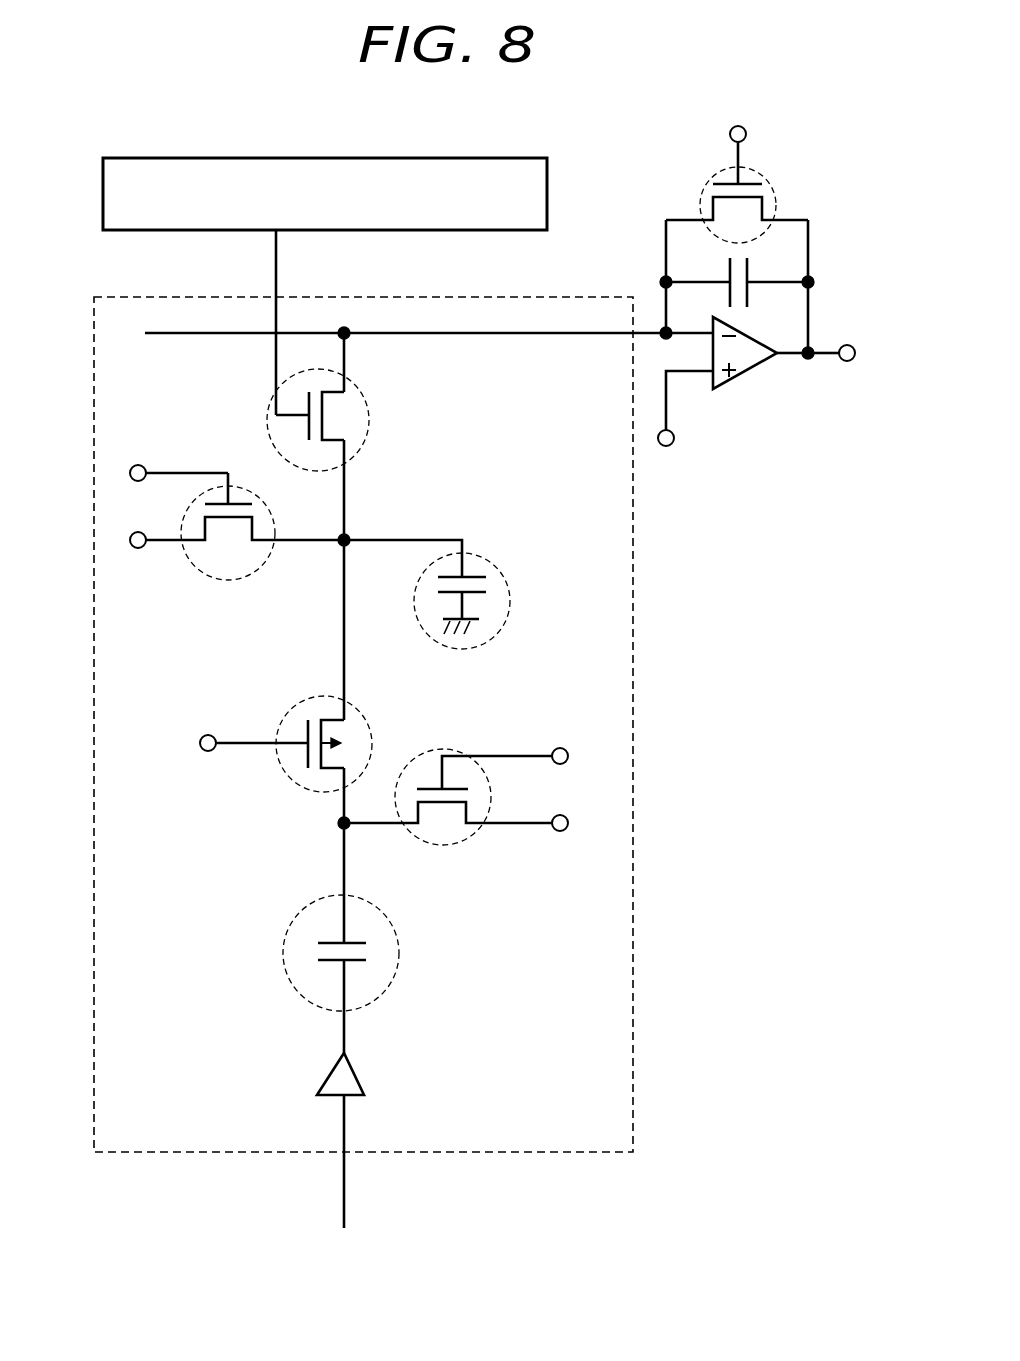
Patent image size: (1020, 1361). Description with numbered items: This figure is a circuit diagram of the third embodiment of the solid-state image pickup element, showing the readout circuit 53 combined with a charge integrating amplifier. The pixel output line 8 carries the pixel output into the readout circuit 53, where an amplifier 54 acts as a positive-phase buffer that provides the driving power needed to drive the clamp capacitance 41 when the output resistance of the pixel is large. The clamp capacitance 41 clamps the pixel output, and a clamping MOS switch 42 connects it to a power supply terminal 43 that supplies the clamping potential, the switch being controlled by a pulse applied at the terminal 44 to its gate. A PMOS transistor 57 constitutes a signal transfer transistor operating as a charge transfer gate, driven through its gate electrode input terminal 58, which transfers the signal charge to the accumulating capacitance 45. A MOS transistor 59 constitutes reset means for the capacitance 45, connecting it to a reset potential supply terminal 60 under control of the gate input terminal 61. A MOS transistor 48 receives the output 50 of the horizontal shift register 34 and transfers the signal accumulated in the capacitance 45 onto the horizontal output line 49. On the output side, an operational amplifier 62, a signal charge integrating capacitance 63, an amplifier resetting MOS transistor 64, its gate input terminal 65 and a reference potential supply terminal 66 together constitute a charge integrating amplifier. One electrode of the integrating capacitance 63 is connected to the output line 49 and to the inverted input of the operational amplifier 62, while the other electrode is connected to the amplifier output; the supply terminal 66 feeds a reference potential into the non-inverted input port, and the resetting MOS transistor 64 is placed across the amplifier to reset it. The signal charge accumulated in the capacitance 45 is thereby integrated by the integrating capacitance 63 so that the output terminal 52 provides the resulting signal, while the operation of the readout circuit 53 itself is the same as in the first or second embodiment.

The pixel output line 8 is at (346, 1190).
The horizontal shift register 34 is at (549, 192).
The clamp capacitance 41 is at (284, 968).
The clamping MOS switch 42 is at (423, 752).
The power supply terminal 43 is at (560, 832).
The terminal 44 is at (562, 747).
The capacitance 45 is at (509, 618).
The MOS transistor 48 is at (367, 425).
The horizontal output line 49 is at (545, 336).
The output 50 is at (278, 277).
The output terminal 52 is at (847, 362).
The readout circuit 53 is at (635, 597).
The amplifier 54 is at (356, 1082).
The PMOS transistor 57 is at (312, 696).
The gate electrode input terminal 58 is at (206, 735).
The MOS transistor 59 is at (232, 580).
The reset potential supply terminal 60 is at (140, 549).
The gate input terminal 61 is at (140, 464).
The operational amplifier 62 is at (742, 376).
The signal charge integrating capacitance 63 is at (750, 272).
The amplifier resetting MOS transistor 64 is at (777, 190).
The gate input terminal 65 is at (747, 134).
The supply terminal 66 is at (670, 446).